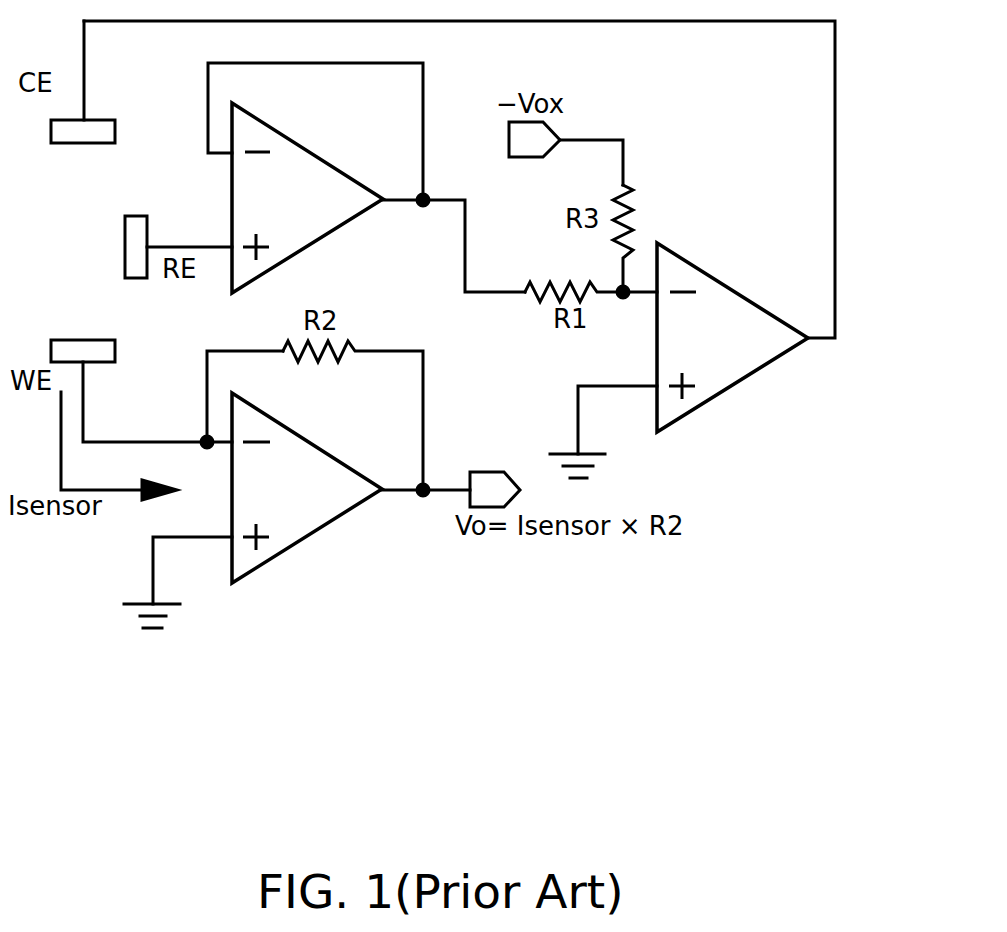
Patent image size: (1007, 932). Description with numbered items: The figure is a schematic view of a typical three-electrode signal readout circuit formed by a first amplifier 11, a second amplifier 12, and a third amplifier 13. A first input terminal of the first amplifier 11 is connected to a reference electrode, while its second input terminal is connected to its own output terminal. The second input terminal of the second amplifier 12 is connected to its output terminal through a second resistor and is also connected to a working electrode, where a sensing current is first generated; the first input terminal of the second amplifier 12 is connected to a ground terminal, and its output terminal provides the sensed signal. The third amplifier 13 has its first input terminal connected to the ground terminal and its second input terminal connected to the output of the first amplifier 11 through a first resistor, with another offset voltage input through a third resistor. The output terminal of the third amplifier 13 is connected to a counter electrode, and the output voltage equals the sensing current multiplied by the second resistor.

The first amplifier 11 is at (280, 166).
The second amplifier 12 is at (302, 522).
The third amplifier 13 is at (738, 363).